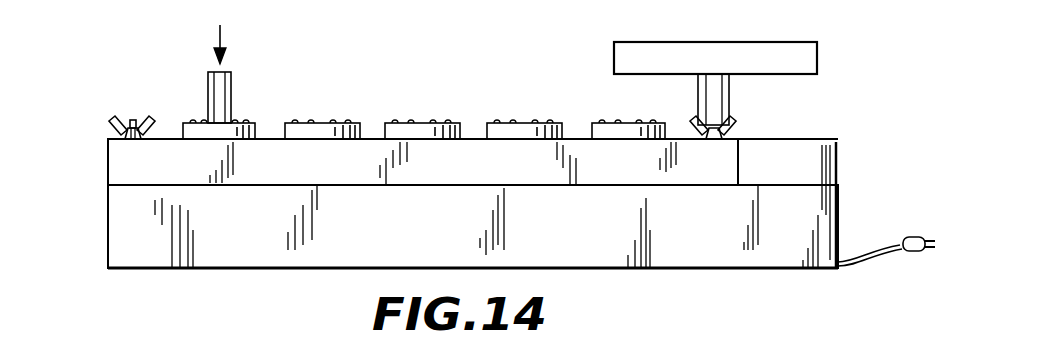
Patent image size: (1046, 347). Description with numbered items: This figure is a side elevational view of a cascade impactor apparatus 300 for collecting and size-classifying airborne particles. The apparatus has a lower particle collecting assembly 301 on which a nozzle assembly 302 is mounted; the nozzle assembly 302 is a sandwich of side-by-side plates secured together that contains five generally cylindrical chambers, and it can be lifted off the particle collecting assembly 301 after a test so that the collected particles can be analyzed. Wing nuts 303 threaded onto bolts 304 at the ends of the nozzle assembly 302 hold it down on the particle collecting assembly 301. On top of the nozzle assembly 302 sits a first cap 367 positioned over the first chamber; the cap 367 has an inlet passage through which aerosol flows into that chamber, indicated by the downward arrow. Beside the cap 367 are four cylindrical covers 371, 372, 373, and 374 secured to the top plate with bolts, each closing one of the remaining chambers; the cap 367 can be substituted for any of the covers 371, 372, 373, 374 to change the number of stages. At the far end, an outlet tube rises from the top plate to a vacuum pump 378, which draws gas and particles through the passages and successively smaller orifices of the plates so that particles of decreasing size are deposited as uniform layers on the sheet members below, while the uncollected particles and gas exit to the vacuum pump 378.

The vacuum holding apparatus 300 is at (836, 112).
The particle collecting assembly 301 is at (128, 226).
The nozzle assembly 302 is at (125, 160).
The wing nut 303 is at (118, 120).
The bolt 304 is at (142, 118).
The first cap 367 is at (244, 124).
The cylindrical cover 371 is at (325, 126).
The cylindrical cover 372 is at (420, 128).
The cylindrical cover 373 is at (522, 128).
The cylindrical cover 374 is at (628, 130).
The vacuum pump 378 is at (790, 42).